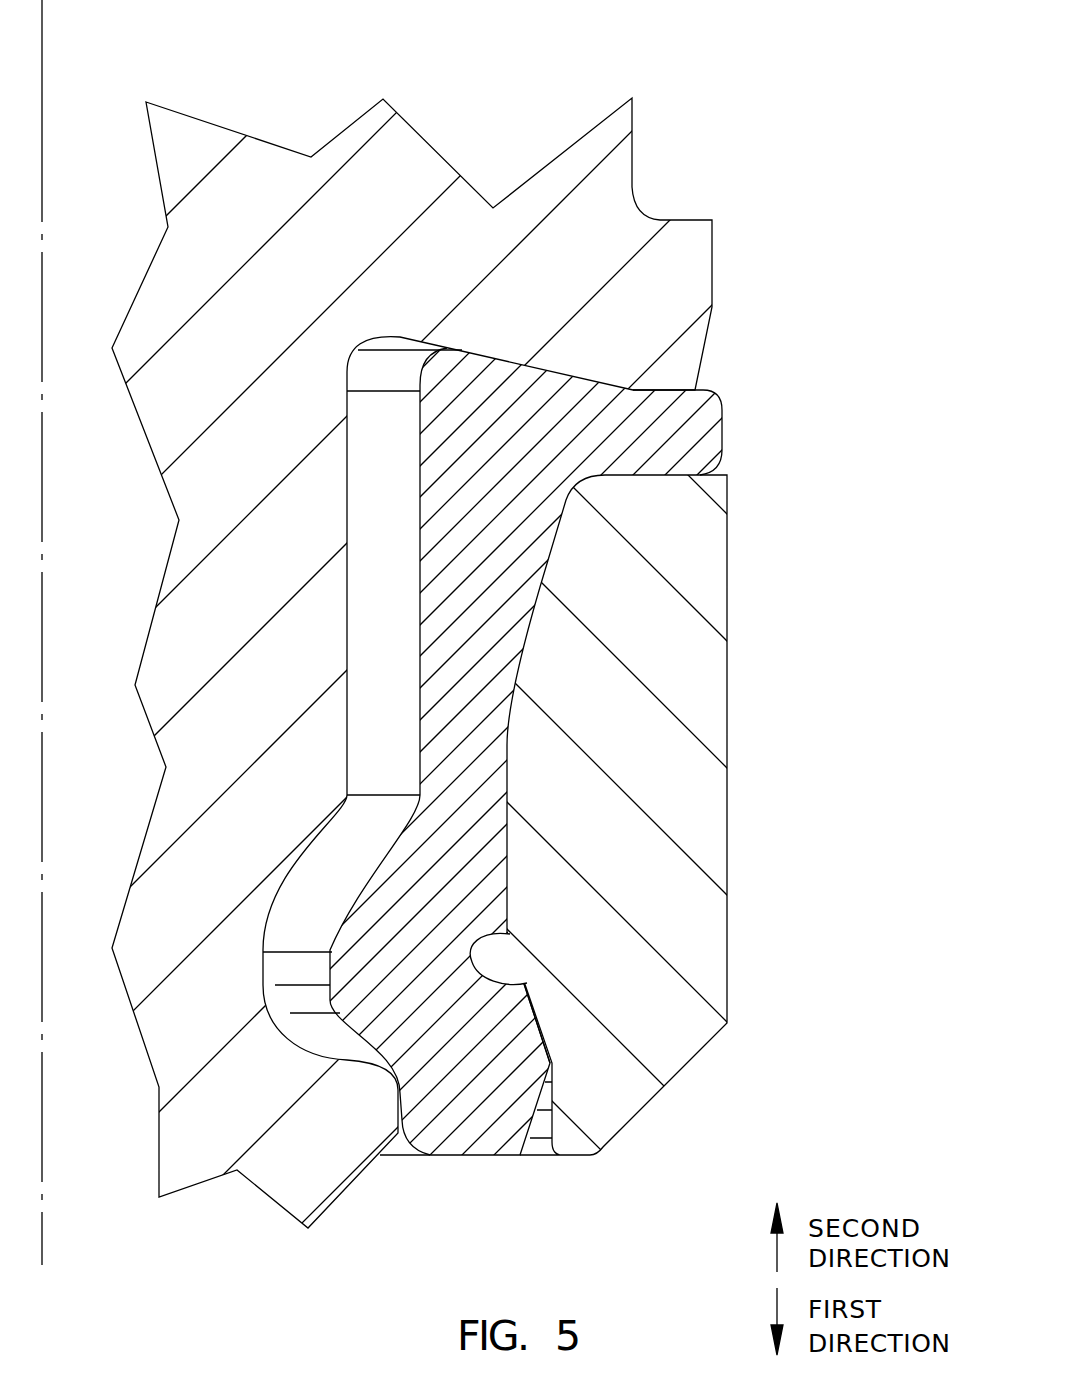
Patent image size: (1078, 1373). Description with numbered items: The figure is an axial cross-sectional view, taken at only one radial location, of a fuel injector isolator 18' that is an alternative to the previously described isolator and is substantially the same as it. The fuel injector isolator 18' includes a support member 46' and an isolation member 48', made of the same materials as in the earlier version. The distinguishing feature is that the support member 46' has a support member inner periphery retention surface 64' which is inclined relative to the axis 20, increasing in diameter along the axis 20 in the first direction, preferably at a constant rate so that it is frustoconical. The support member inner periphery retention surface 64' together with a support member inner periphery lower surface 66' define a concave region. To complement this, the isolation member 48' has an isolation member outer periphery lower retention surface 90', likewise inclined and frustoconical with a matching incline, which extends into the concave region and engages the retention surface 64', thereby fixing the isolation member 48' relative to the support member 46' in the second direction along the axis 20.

The axis 20 is at (42, 35).
The fuel injector isolator 18' is at (539, 686).
The support member 46' is at (539, 686).
The isolation member 48' is at (539, 686).
The support member inner periphery retention surface 64' is at (645, 958).
The isolation member outer periphery lower retention surface 90' is at (686, 997).
The support member inner periphery lower surface 66' is at (531, 1160).